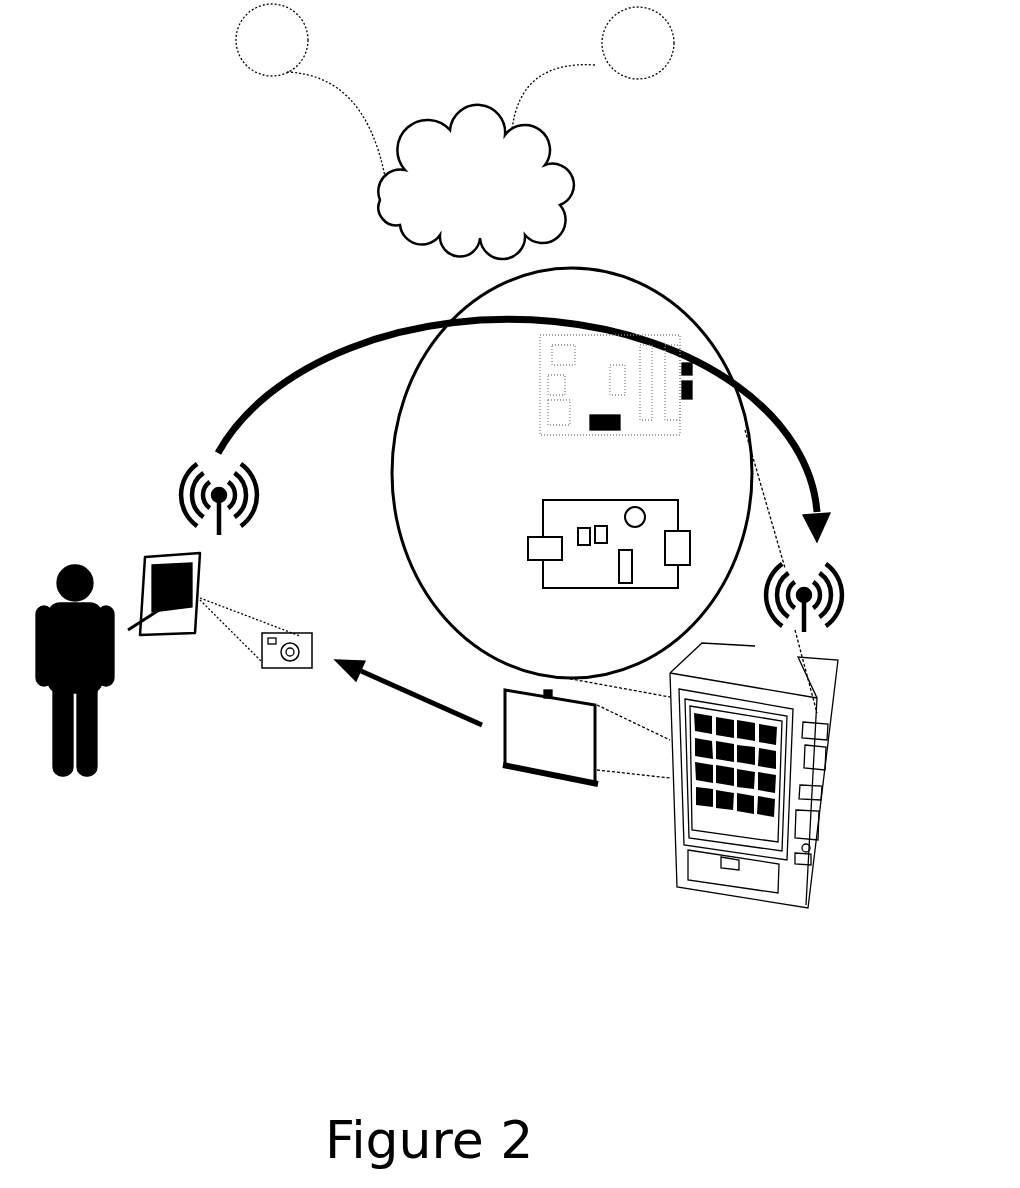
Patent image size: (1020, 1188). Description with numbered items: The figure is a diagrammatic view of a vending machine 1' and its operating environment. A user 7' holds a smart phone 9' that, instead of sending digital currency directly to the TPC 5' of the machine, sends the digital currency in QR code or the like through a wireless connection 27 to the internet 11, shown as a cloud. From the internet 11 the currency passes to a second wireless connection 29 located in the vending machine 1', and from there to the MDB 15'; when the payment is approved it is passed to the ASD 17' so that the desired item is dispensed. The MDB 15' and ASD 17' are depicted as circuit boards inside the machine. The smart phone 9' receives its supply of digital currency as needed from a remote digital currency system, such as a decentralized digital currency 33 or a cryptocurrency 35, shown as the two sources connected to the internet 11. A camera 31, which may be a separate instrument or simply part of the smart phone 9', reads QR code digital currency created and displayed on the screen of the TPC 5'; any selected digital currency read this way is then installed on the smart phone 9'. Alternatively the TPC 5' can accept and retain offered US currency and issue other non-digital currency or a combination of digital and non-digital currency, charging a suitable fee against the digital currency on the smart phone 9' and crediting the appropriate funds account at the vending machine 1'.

The vending machine 1' is at (754, 865).
The TPC 5' is at (539, 789).
The user 7' is at (66, 726).
The smart phone 9' is at (137, 510).
The internet 11 is at (568, 185).
The MDB 15' is at (573, 559).
The ASD 17' is at (562, 404).
The wireless connection 27 is at (268, 480).
The wireless connection 29 is at (853, 605).
The camera 31 is at (287, 668).
The decentralized digital currency 33 is at (228, 63).
The cryptocurrency 35 is at (700, 37).